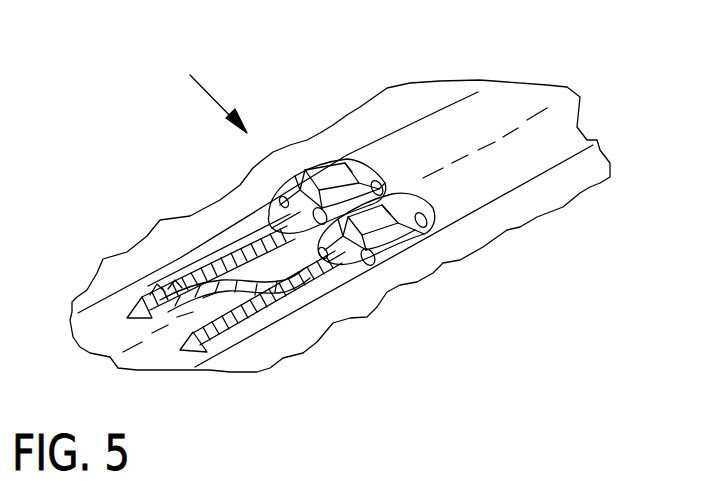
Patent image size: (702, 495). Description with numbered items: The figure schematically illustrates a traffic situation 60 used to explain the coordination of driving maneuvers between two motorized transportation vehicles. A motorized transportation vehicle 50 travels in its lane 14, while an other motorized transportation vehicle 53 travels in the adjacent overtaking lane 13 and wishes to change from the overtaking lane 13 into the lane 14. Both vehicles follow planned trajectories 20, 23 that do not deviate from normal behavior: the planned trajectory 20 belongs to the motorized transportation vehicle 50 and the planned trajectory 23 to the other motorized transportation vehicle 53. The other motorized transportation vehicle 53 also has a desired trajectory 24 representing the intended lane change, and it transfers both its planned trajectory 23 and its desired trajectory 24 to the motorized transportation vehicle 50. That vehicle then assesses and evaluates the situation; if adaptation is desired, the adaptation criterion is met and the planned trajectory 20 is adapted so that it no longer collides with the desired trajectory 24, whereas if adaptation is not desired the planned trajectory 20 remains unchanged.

The overtaking lane 13 is at (498, 163).
The lane 14 is at (413, 153).
The planned trajectory 20 is at (228, 262).
The planned trajectory 23 is at (228, 322).
The desired trajectory 24 is at (146, 305).
The motorized transportation vehicle 50 is at (330, 165).
The other motorized transportation vehicle 53 is at (382, 205).
The traffic situation 60 is at (201, 89).